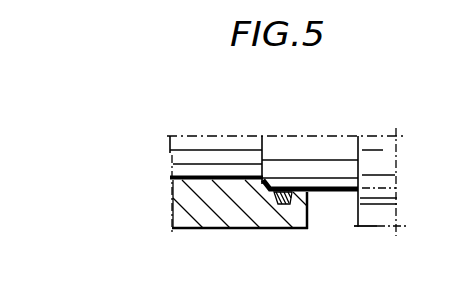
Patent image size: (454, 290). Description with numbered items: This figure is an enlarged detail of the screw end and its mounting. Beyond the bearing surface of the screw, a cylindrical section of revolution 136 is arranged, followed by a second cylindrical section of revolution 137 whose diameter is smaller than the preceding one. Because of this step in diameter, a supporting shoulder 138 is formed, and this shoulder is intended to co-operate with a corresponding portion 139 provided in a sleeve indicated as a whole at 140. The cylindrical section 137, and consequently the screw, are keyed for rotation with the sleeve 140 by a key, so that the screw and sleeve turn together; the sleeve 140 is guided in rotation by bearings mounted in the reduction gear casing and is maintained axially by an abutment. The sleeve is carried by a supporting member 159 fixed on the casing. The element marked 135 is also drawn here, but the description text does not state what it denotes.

The housing 135 is at (391, 147).
The support member 136 is at (340, 147).
The rail 137 is at (202, 152).
The plate 138 is at (264, 182).
The insert 139 is at (268, 186).
The block assembly 140 is at (172, 213).
The flange 159 is at (396, 220).